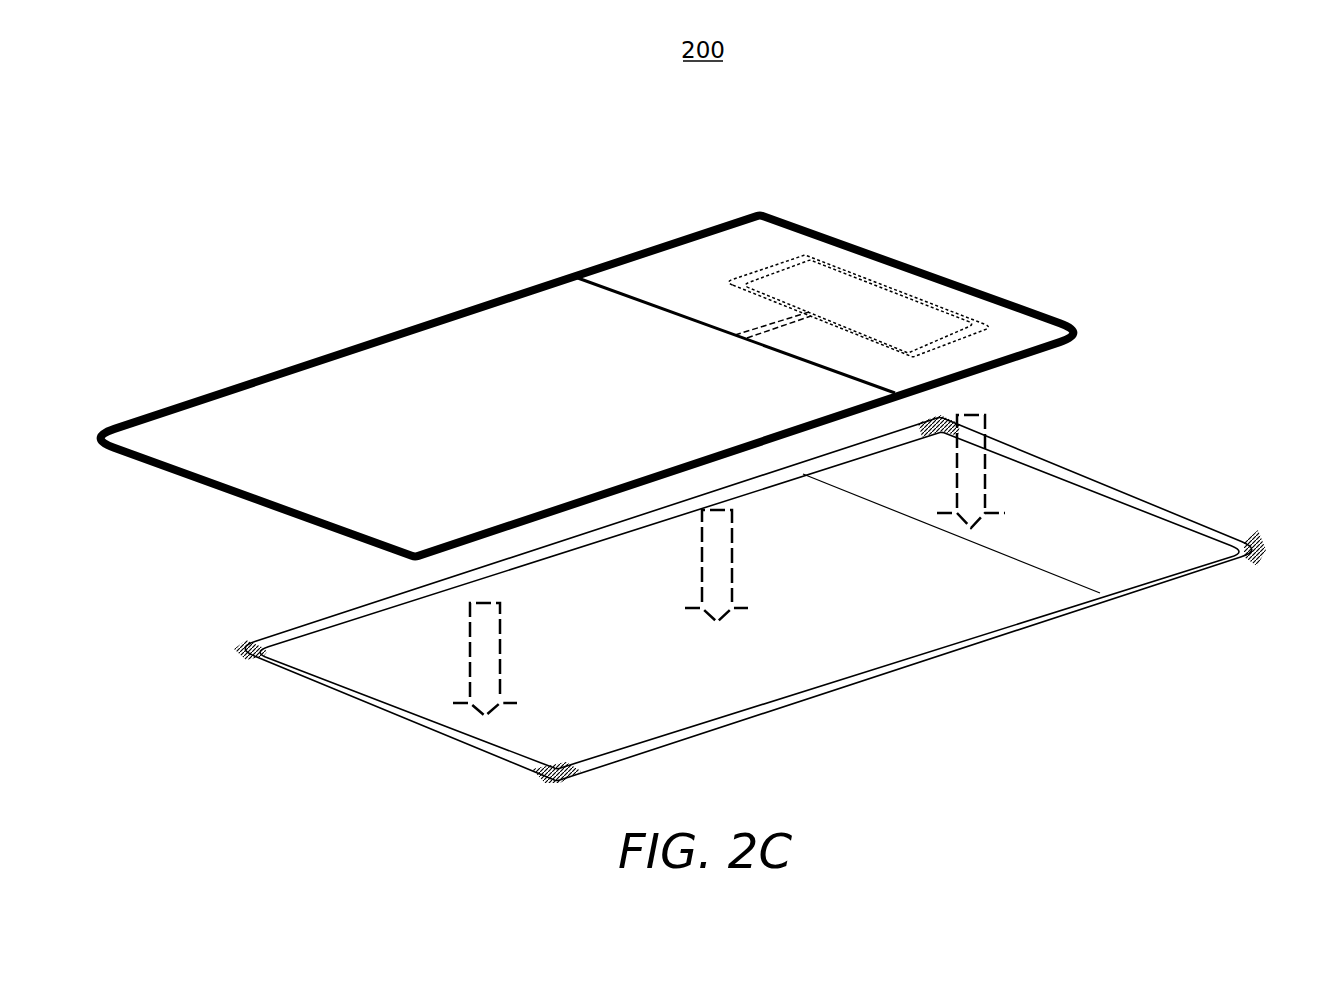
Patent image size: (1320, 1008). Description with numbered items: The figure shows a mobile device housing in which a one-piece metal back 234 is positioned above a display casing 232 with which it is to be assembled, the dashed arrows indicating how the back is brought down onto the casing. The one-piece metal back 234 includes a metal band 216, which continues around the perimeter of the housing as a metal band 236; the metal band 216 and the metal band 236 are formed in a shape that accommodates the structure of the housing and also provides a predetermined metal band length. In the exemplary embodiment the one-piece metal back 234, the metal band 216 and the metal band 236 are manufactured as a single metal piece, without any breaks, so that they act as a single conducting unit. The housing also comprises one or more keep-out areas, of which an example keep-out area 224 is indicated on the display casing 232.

The metal band 216 is at (741, 298).
The keep-out area 224 is at (1084, 510).
The display casing 232 is at (750, 596).
The one-piece metal back 234 is at (587, 386).
The metal band 236 is at (970, 281).